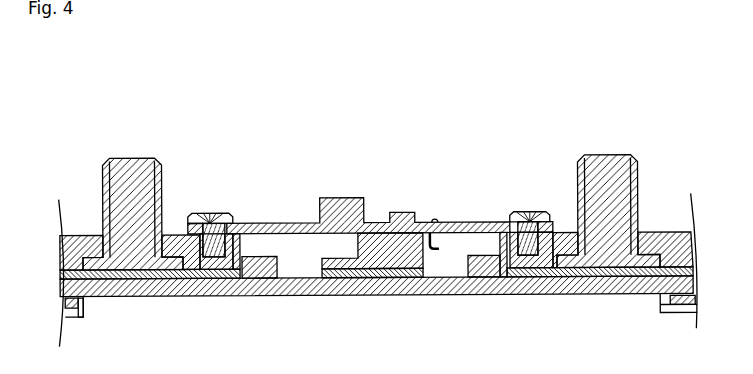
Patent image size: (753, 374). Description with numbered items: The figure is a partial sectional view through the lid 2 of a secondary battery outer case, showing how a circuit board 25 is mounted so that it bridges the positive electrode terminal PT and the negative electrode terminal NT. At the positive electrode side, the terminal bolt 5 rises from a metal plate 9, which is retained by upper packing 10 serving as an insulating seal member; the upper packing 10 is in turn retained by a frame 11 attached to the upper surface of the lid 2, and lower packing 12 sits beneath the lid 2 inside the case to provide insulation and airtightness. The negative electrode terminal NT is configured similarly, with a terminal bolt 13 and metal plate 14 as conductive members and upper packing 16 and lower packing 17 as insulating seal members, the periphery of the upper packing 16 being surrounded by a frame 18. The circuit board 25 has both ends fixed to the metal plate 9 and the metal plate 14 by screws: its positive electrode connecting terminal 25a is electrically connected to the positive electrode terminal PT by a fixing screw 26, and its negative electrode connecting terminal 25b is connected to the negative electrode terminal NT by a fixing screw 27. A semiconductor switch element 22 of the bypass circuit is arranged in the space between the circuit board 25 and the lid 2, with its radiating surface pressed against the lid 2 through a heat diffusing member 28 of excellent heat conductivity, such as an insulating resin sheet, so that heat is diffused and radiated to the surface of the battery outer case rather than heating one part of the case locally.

The lid 2 is at (160, 296).
The terminal bolt 5 is at (127, 157).
The metal plate 9 is at (75, 234).
The upper packing 10 is at (242, 243).
The frame 11 is at (277, 264).
The lower packing 12 is at (86, 305).
The terminal bolt 13 is at (639, 161).
The metal plate 14 is at (668, 233).
The upper packing 16 is at (500, 242).
The lower packing 17 is at (660, 299).
The frame 18 is at (458, 283).
The semiconductor switch element 22 is at (436, 249).
The circuit board 25 is at (380, 222).
The positive electrode connecting terminal 25a is at (243, 220).
The negative electrode connecting terminal 25b is at (500, 217).
The fixing screw 26 is at (210, 212).
The fixing screw 27 is at (535, 212).
The heat diffusing member 28 is at (335, 278).
The positive electrode terminal PT is at (187, 152).
The negative electrode terminal NT is at (566, 152).